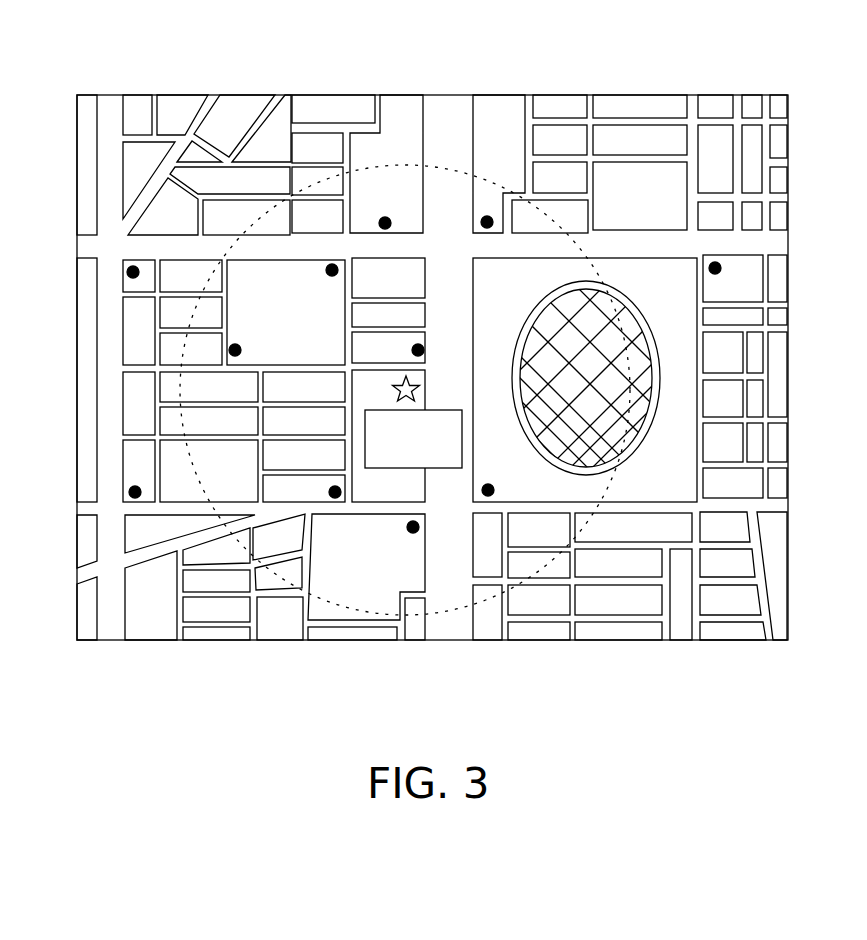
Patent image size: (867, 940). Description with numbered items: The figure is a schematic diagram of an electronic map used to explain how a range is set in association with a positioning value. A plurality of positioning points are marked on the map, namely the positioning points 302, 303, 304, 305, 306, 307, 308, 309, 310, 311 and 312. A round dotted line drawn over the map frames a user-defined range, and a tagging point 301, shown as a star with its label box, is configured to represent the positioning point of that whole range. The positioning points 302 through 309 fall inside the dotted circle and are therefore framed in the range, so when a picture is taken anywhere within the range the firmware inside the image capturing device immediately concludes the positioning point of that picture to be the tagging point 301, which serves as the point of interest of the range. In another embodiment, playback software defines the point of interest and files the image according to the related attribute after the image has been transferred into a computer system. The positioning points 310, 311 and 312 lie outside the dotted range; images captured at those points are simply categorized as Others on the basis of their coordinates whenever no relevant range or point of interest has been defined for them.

The tagging point 301 is at (441, 409).
The positioning point 302 is at (424, 350).
The positioning point 303 is at (392, 223).
The positioning point 304 is at (327, 270).
The positioning point 305 is at (241, 350).
The positioning point 306 is at (336, 498).
The positioning point 307 is at (413, 533).
The positioning point 308 is at (488, 483).
The positioning point 309 is at (487, 229).
The positioning point 310 is at (128, 272).
The positioning point 311 is at (129, 492).
The positioning point 312 is at (710, 265).